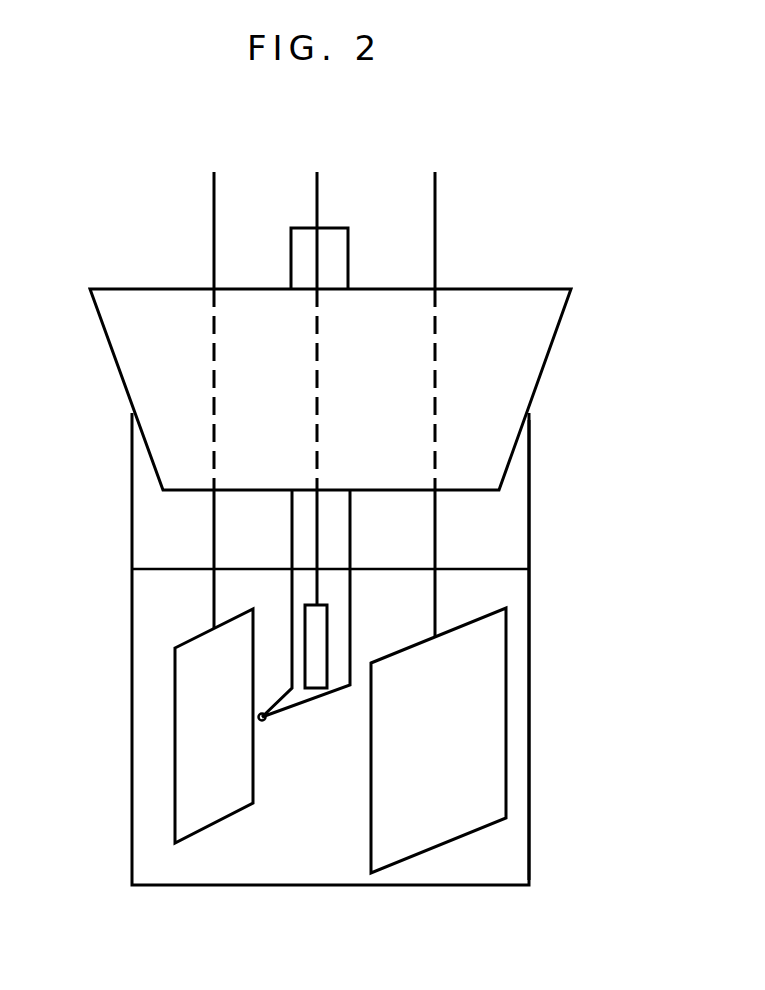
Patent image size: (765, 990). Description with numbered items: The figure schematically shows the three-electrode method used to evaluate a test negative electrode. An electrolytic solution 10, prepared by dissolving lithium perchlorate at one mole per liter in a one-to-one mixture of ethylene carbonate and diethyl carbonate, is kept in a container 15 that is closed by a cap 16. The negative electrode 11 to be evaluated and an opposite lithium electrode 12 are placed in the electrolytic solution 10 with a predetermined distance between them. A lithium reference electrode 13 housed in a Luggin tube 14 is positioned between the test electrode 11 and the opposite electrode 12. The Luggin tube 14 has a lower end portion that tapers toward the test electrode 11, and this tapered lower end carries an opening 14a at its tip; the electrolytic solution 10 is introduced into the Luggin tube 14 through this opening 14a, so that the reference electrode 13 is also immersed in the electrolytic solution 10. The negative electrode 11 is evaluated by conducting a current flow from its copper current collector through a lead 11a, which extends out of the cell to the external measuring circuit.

The electrolytic solution 10 is at (226, 867).
The negative electrode 11 is at (185, 722).
The lead 11a is at (213, 222).
The opposite lithium electrode 12 is at (488, 740).
The lithium reference electrode 13 is at (317, 688).
The Luggin tube 14 is at (350, 550).
The opening 14a is at (265, 721).
The container 15 is at (529, 485).
The cap 16 is at (540, 337).